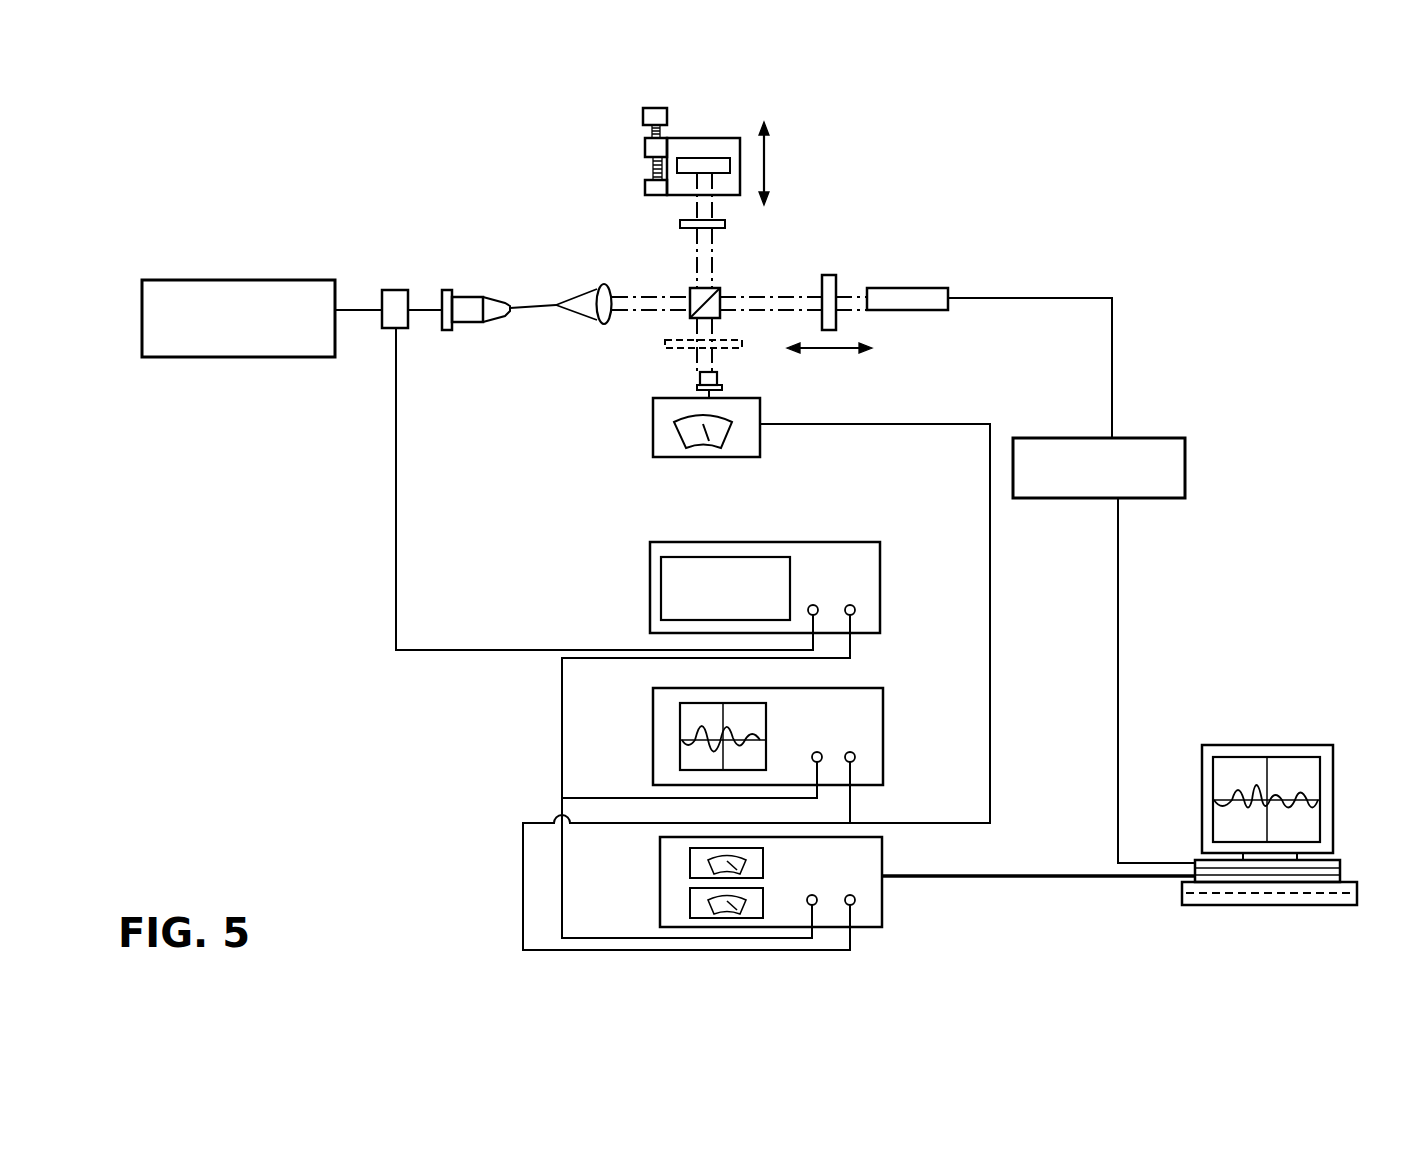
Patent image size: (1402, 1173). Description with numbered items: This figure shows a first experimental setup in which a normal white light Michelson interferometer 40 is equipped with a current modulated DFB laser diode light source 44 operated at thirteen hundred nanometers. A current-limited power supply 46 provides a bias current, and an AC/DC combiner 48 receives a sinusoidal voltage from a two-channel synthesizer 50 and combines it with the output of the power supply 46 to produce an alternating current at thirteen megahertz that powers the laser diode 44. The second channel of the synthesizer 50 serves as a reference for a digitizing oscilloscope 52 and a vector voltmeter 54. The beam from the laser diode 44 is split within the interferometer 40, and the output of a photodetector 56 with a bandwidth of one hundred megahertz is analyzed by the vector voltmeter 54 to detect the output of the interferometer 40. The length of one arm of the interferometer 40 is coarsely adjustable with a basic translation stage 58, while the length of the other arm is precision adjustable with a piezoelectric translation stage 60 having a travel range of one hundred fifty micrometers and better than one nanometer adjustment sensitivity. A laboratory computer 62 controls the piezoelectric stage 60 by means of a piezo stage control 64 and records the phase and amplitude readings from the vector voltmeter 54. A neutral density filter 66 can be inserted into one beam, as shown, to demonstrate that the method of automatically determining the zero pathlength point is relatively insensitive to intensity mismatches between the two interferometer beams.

The Michelson interferometer 40 is at (803, 197).
The laser diode light source 44 is at (463, 297).
The power supply 46 is at (236, 358).
The AC/DC combiner 48 is at (395, 290).
The synthesizer 50 is at (770, 542).
The digitizing oscilloscope 52 is at (885, 706).
The vector voltmeter 54 is at (885, 907).
The photodetector 56 is at (722, 377).
The translation stage 58 is at (700, 138).
The piezoelectric translation stage 60 is at (929, 288).
The laboratory computer 62 is at (1256, 745).
The piezo stage control 64 is at (1166, 438).
The neutral density filter 66 is at (665, 344).